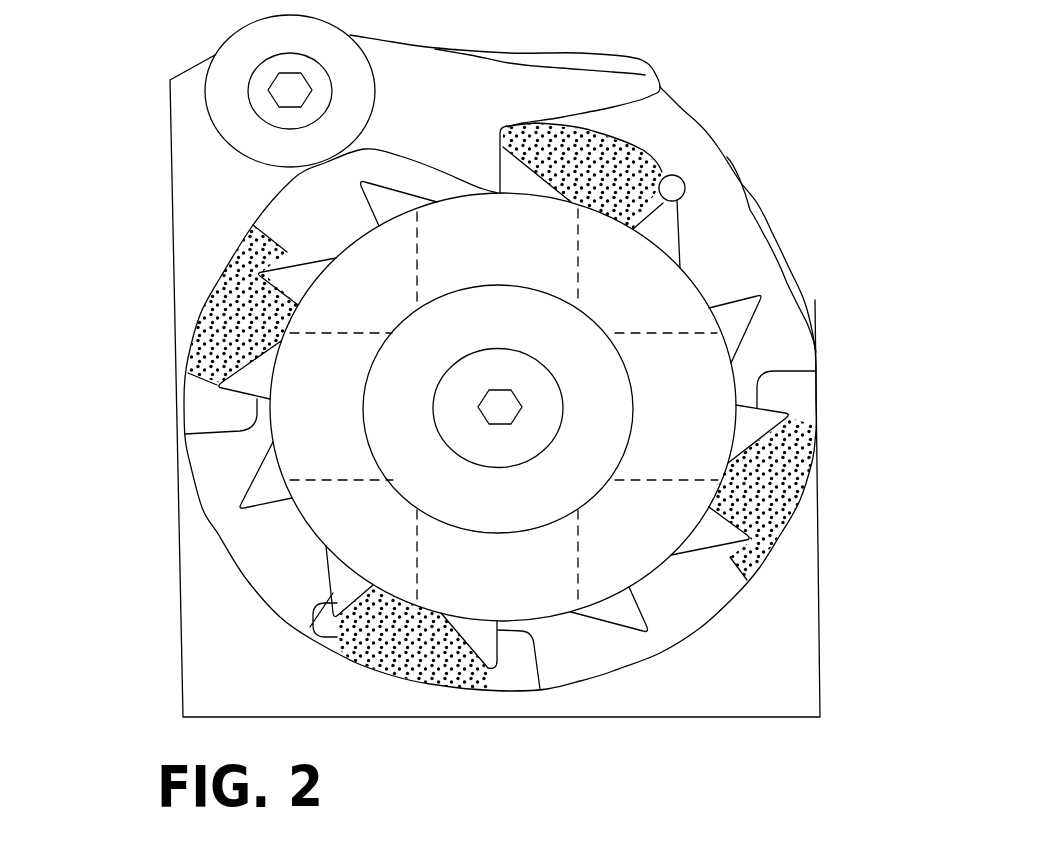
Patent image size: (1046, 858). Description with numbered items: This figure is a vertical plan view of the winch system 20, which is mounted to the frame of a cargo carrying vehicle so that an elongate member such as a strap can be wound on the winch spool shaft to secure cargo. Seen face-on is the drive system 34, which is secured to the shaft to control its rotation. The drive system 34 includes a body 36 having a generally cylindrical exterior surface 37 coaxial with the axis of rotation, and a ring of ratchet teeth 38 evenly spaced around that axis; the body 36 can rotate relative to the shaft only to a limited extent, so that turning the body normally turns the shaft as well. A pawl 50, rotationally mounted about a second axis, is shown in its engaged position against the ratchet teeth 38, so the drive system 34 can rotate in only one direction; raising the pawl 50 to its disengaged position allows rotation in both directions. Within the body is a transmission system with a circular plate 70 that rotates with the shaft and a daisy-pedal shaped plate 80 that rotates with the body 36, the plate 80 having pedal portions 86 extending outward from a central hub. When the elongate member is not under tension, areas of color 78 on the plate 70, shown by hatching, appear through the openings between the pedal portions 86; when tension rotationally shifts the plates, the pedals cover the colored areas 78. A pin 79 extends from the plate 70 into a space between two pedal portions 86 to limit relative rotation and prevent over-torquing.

The winch system 20 is at (136, 418).
The drive system 34 is at (297, 540).
The body 36 is at (708, 413).
The exterior surface 37 is at (680, 268).
The ratchet teeth 38 is at (645, 632).
The pawl 50 is at (462, 120).
The plate 70 is at (625, 133).
The areas of color 78 is at (207, 288).
The pin 79 is at (683, 178).
The plate 80 is at (749, 212).
The pedal portions 86 is at (708, 593).